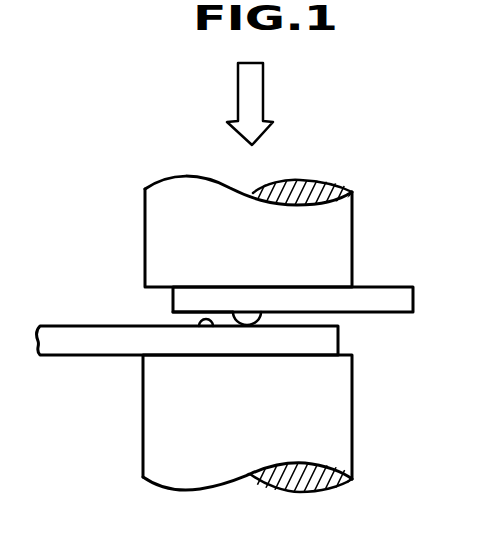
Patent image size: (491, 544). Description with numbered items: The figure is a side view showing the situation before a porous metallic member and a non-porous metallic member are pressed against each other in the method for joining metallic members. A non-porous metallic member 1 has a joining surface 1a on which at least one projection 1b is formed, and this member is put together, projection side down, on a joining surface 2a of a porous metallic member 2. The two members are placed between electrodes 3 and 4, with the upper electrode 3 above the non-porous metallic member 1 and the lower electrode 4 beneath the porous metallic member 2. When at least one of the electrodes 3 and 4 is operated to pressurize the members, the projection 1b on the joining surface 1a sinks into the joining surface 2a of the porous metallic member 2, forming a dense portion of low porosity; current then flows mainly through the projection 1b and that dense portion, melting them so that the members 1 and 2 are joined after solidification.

The non-porous metallic member 1 is at (402, 300).
The joining surface 1a is at (187, 320).
The projection 1b is at (263, 320).
The porous metallic member 2 is at (328, 340).
The joining surface 2a is at (213, 328).
The electrode 3 is at (335, 224).
The electrode 4 is at (335, 435).